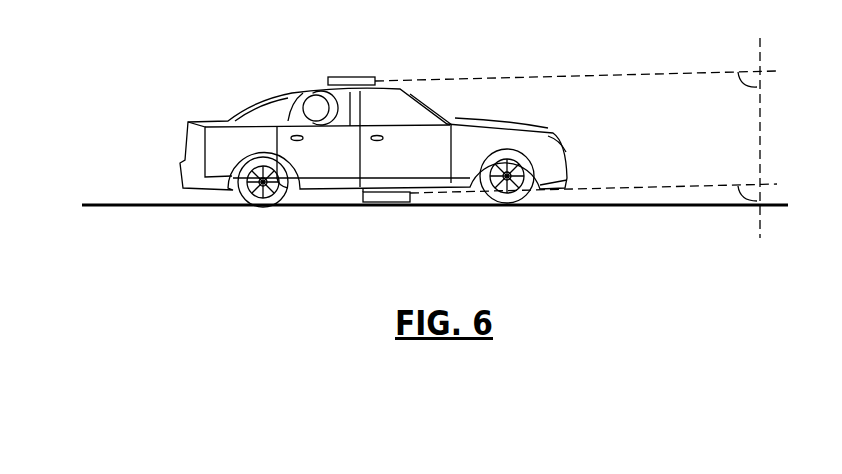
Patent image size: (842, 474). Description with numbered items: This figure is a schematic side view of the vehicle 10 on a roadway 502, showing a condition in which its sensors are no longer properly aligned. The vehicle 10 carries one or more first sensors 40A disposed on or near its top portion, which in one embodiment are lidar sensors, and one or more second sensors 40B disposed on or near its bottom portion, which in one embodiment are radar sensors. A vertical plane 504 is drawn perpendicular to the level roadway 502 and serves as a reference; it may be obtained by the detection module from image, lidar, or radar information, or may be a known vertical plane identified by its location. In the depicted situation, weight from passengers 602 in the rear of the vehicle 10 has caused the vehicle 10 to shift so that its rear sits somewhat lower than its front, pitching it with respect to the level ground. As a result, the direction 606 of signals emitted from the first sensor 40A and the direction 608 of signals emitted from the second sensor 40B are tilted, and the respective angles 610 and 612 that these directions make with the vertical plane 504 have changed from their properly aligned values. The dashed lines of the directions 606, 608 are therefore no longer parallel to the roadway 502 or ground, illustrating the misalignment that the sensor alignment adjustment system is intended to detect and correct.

The vehicle 10 is at (426, 168).
The first sensor 40A is at (345, 76).
The second sensor 40B is at (363, 205).
The roadway 502 is at (100, 208).
The vertical plane 504 is at (760, 138).
The passengers 602 is at (306, 104).
The direction of signals emitted from the first sensor 606 is at (478, 78).
The direction of signals emitted from the second sensor 608 is at (585, 190).
The angle 610 is at (743, 76).
The angle 612 is at (743, 190).